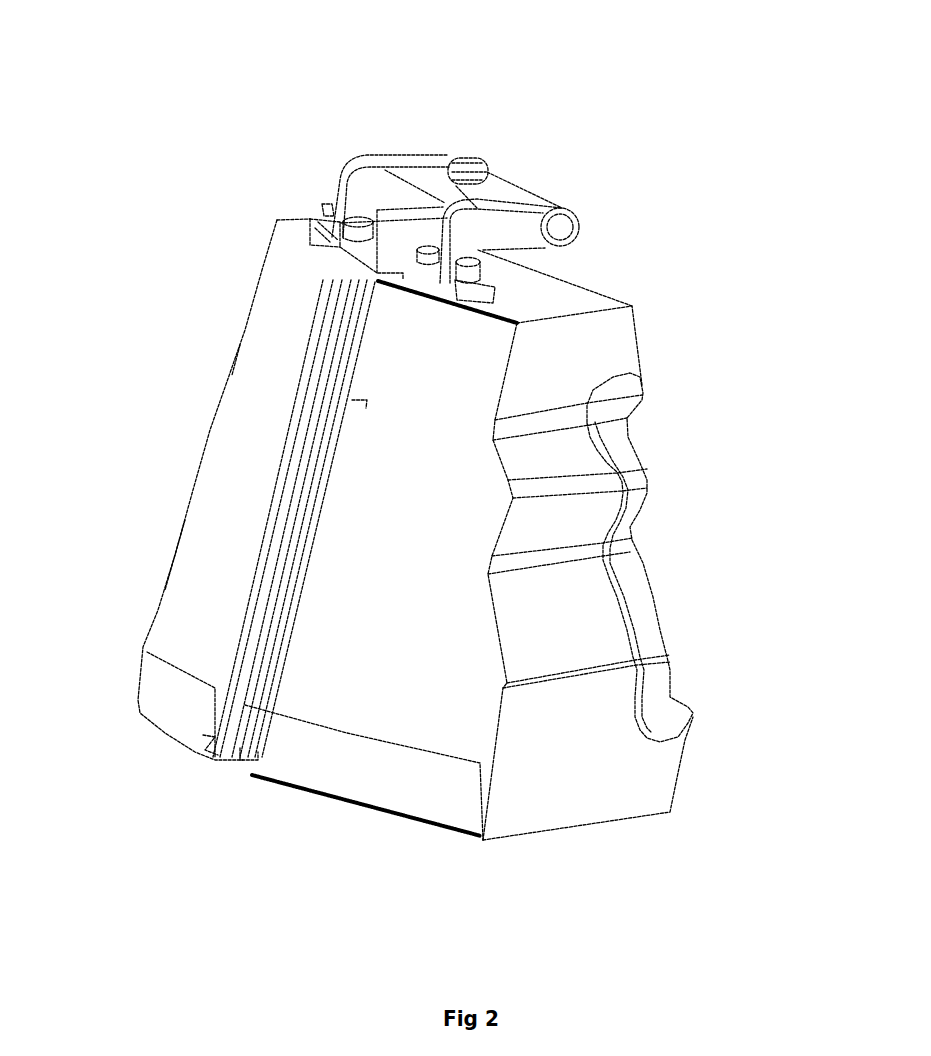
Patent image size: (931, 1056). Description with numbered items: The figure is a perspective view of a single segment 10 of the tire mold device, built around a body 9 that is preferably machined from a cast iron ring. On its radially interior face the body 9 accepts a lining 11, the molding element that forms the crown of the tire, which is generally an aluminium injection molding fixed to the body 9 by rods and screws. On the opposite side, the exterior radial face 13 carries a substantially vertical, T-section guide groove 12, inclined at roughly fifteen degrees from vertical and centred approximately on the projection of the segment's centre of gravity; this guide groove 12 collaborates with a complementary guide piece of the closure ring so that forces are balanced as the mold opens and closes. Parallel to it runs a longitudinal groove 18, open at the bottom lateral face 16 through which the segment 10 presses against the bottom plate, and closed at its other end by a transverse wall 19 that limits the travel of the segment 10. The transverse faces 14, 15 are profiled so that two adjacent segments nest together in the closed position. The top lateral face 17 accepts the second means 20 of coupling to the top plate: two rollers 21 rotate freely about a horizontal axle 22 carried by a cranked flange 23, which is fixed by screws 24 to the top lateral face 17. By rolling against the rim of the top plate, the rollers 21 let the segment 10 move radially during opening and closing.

The body 9 is at (222, 498).
The segment 10 is at (240, 288).
The lining 11 is at (630, 530).
The guide groove 12 is at (375, 274).
The exterior radial face 13 is at (208, 612).
The transverse face 14 is at (572, 644).
The transverse face 15 is at (233, 372).
The bottom lateral face 16 is at (556, 827).
The top lateral face 17 is at (573, 300).
The longitudinal groove 18 is at (255, 755).
The transverse wall 19 is at (355, 403).
The second means of coupling 20 is at (477, 148).
The roller 21 is at (455, 160).
The horizontal axle 22 is at (567, 230).
The cranked flange 23 is at (512, 228).
The screw 24 is at (328, 207).